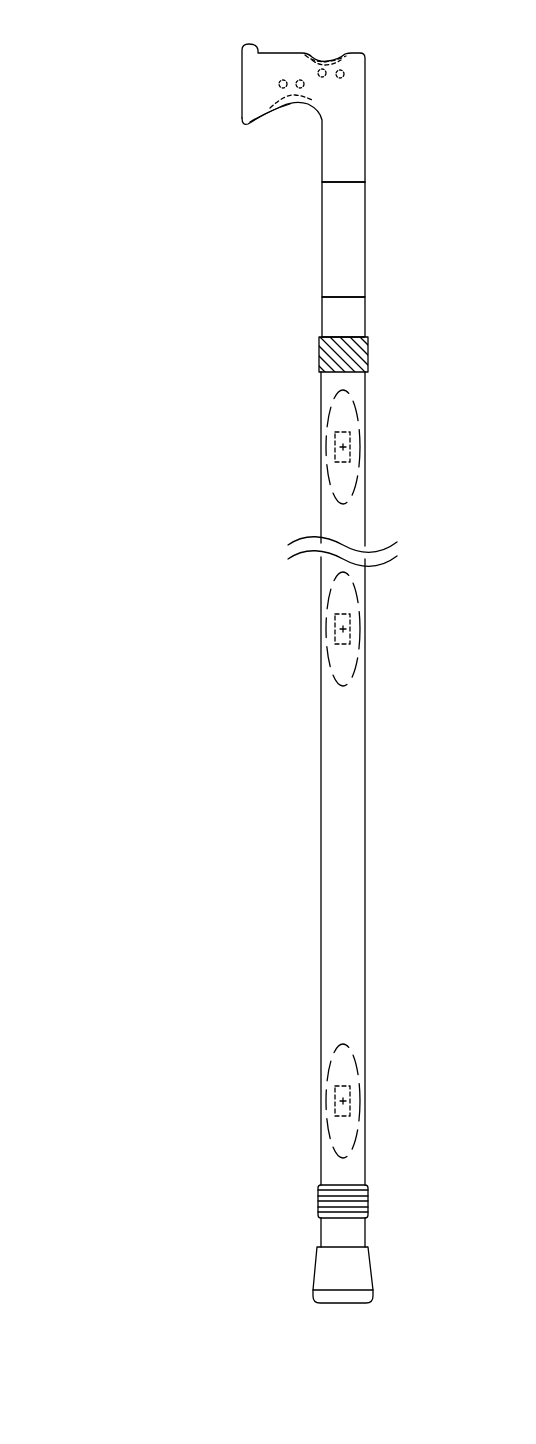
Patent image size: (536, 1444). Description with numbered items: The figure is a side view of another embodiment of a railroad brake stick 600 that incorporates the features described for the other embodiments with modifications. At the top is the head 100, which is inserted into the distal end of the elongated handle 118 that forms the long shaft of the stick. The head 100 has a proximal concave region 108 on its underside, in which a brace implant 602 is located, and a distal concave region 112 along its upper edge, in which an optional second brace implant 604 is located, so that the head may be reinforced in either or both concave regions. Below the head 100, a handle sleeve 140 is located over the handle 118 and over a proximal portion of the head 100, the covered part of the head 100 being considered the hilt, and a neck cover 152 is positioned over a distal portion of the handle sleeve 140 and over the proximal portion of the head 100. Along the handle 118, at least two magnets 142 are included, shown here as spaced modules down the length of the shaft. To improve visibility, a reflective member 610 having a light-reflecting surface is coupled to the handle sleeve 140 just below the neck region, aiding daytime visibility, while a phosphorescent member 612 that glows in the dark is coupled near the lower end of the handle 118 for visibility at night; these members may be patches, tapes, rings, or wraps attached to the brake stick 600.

The brake stick 600 is at (124, 50).
The head 100 is at (276, 68).
The distal concave region 112 is at (322, 50).
The second brace implant 604 is at (334, 60).
The brace implant 602 is at (294, 100).
The proximal concave region 108 is at (291, 124).
The neck cover 152 is at (365, 260).
The handle sleeve 140 is at (345, 318).
The reflective member 610 is at (318, 353).
The handle 118 is at (345, 520).
The magnets 142 is at (348, 447).
The phosphorescent member 612 is at (318, 1202).